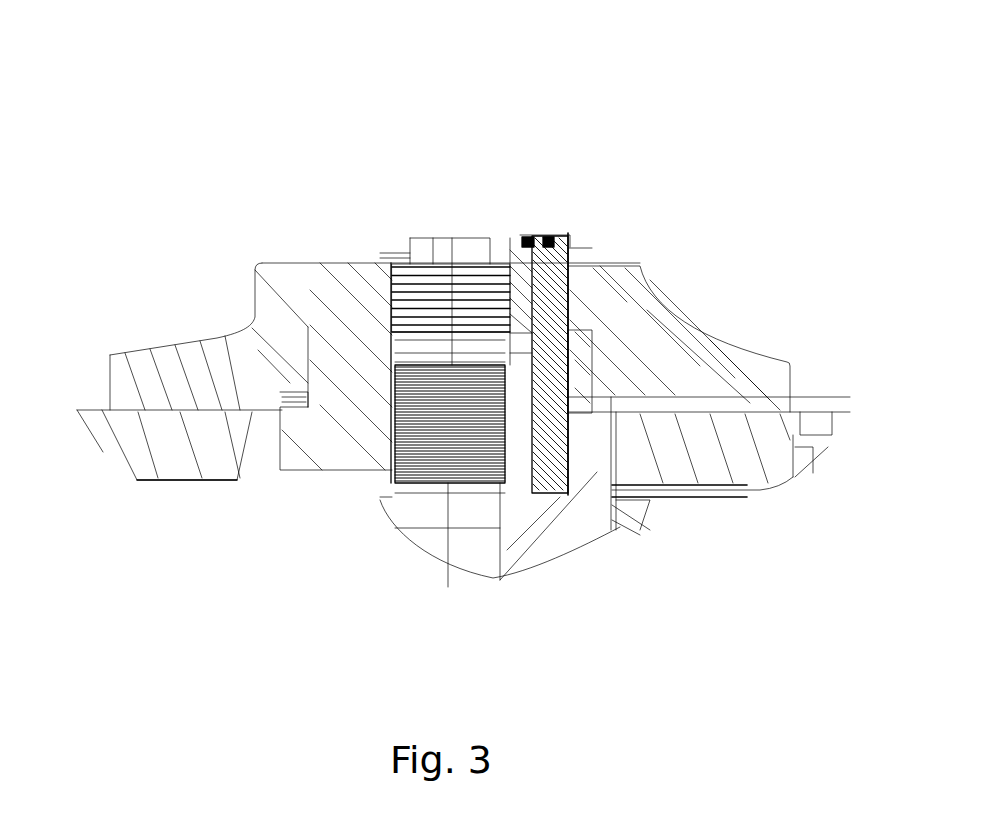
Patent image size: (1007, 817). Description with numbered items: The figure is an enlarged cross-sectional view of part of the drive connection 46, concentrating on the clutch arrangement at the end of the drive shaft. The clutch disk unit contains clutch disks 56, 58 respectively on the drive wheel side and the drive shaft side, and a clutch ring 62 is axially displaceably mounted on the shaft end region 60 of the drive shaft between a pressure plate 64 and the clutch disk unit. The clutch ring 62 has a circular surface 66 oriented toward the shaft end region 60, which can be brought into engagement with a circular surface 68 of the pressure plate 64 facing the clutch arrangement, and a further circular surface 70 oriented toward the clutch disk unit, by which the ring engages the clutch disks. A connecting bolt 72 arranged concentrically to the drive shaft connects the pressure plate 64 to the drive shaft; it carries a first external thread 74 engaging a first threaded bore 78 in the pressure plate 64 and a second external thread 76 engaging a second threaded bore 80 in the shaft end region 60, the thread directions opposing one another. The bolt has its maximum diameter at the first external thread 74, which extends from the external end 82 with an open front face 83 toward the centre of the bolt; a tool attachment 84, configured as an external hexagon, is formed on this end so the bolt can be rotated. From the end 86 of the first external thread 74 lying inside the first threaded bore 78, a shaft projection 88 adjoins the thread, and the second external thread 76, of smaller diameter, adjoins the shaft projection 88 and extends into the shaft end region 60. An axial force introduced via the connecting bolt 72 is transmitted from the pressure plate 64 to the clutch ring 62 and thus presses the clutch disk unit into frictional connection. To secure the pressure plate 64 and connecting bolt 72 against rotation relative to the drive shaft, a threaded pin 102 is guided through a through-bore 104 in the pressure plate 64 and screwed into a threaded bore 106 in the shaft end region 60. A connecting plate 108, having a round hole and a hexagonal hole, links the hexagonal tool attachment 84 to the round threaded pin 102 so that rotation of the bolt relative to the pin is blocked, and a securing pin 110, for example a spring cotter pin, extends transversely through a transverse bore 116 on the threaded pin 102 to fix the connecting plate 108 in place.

The drive connection 46 is at (192, 126).
The clutch disk 56 is at (685, 502).
The clutch disk 58 is at (628, 515).
The shaft end region 60 is at (360, 300).
The clutch ring 62 is at (655, 442).
The pressure plate 64 is at (302, 290).
The circular surface 66 is at (213, 407).
The circular surface 68 is at (248, 415).
The circular surface 70 is at (747, 483).
The connecting bolt 72 is at (478, 232).
The first external thread 74 is at (458, 295).
The second external thread 76 is at (473, 322).
The first threaded bore 78 is at (387, 300).
The second threaded bore 80 is at (393, 470).
The end of the connecting bolt 82 is at (517, 240).
The open front face 83 is at (418, 250).
The tool attachment 84 is at (442, 252).
The end of the first external thread 86 is at (465, 400).
The shaft projection 88 is at (489, 357).
The threaded pin 102 is at (592, 266).
The through-bore 104 is at (568, 317).
The threaded bore 106 is at (562, 428).
The connecting plate 108 is at (388, 257).
The securing pin 110 is at (545, 237).
The transverse bore 116 is at (581, 245).